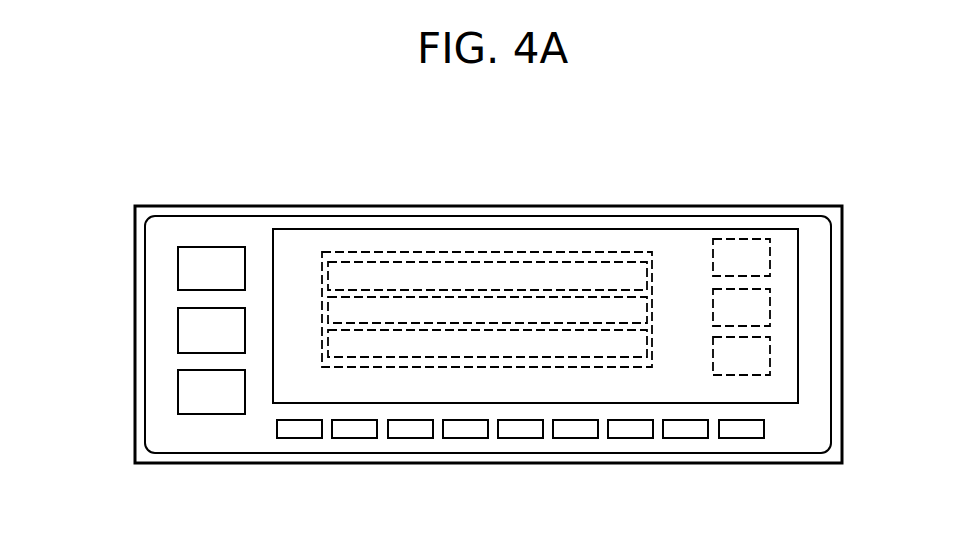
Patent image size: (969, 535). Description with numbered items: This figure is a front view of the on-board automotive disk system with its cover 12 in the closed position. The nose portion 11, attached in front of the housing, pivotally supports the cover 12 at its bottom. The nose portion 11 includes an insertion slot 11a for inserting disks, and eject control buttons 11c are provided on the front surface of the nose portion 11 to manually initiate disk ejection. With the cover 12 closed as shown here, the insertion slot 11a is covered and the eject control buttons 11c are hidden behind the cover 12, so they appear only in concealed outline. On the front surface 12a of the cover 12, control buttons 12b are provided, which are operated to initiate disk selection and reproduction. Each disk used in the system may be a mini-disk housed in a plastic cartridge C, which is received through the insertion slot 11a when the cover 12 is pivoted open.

The nose portion 11 is at (743, 209).
The insertion slot 11a is at (598, 254).
The eject control buttons 11c is at (770, 257).
The cover 12 is at (800, 454).
The front surface of the cover 12a is at (185, 434).
The control buttons 12b is at (190, 277).
The cartridge C is at (325, 335).